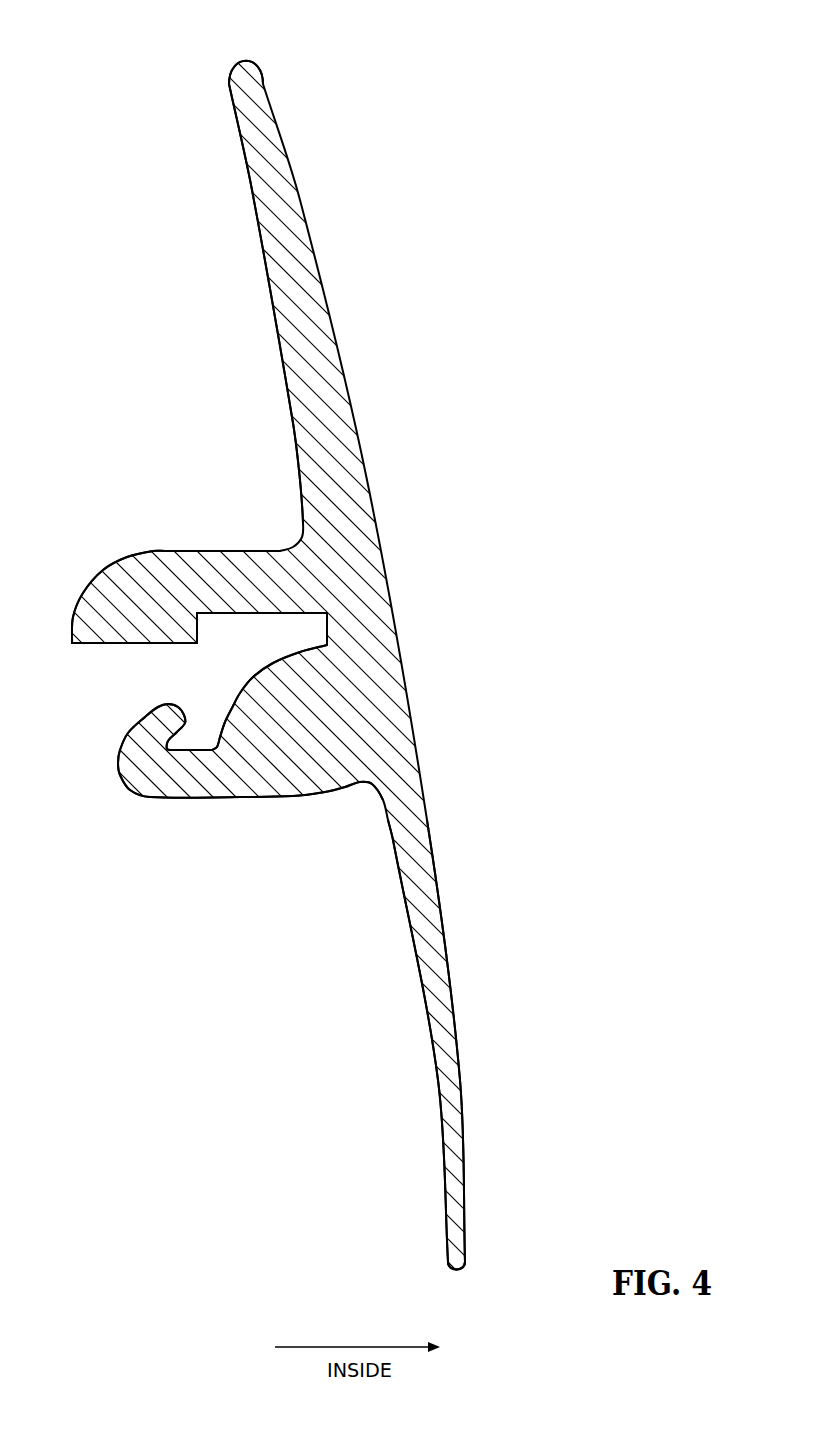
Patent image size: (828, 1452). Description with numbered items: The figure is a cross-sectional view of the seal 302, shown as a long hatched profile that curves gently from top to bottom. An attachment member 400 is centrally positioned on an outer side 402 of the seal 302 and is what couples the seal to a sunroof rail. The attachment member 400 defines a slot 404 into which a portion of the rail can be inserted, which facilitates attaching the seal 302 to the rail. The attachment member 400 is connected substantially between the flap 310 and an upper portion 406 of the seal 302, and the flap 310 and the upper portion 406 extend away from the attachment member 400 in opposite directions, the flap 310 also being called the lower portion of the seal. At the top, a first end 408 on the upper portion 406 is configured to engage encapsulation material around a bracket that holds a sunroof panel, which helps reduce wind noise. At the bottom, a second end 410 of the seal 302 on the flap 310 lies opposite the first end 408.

The seal 302 is at (486, 110).
The flap 310 is at (418, 1030).
The attachment member 400 is at (127, 558).
The outer side 402 is at (291, 416).
The slot 404 is at (158, 681).
The upper portion 406 is at (250, 247).
The first end 408 is at (240, 54).
The second end 410 is at (459, 1270).